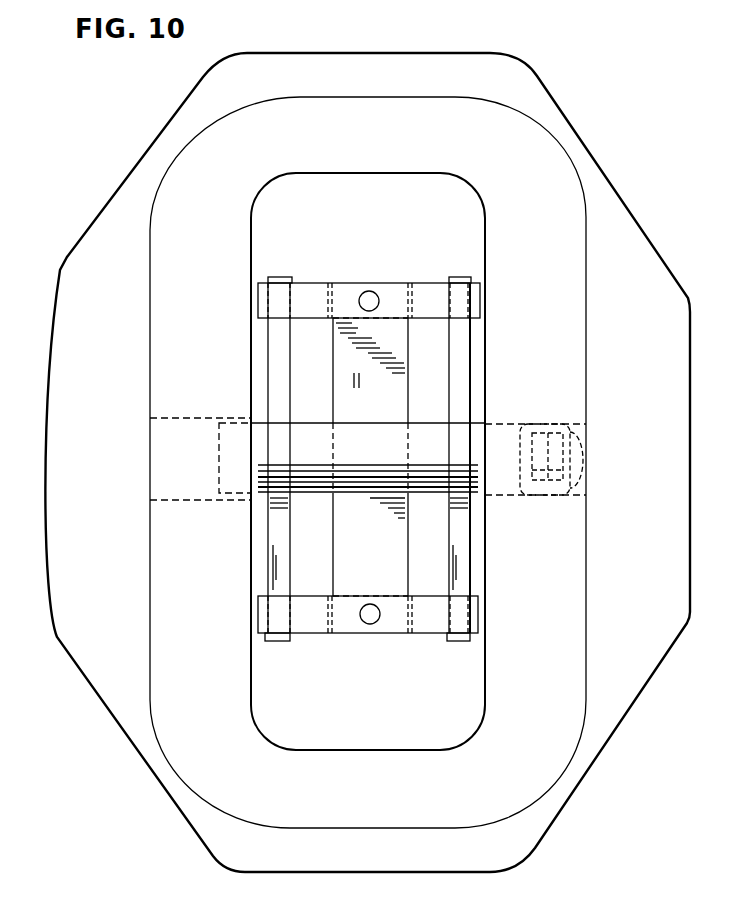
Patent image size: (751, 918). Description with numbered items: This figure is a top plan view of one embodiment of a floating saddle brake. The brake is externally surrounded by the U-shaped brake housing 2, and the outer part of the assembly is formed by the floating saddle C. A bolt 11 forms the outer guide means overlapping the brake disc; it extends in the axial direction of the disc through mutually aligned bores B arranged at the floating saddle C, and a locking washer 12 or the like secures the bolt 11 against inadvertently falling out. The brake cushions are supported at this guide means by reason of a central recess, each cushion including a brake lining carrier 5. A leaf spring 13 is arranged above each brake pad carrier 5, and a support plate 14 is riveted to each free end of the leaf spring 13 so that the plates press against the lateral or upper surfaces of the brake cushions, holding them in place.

The brake housing 2 is at (660, 487).
The floating saddle C is at (565, 197).
The bores B is at (160, 445).
The brake lining carrier 5 is at (272, 358).
The bolt 11 is at (388, 432).
The locking washer 12 is at (540, 424).
The leaf spring 13 is at (382, 563).
The support plate 14 is at (430, 291).